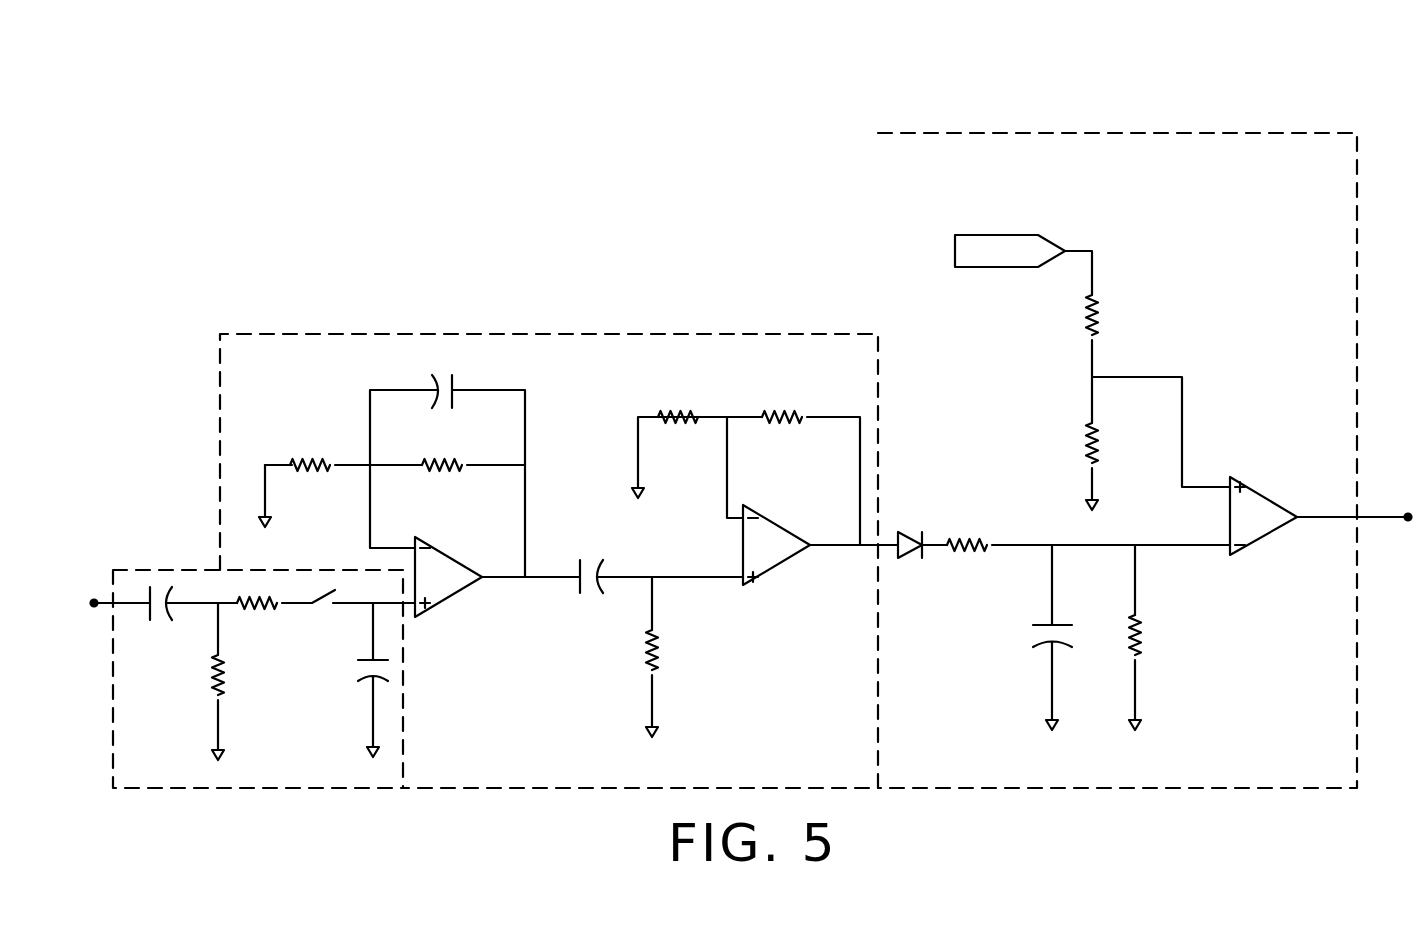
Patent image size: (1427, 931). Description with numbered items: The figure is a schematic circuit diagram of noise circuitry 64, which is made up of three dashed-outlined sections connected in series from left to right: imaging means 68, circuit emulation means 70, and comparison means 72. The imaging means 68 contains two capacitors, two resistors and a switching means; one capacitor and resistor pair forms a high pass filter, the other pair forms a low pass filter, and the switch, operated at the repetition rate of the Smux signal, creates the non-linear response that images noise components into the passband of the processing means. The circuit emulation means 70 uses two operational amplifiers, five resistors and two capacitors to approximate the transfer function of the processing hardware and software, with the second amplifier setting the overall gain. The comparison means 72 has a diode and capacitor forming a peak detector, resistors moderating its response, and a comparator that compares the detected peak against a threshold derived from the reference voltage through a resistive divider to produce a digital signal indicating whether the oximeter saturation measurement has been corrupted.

The noise circuitry 64 is at (268, 157).
The imaging means 68 is at (262, 790).
The circuit emulation means 70 is at (630, 333).
The comparison means 72 is at (1258, 130).